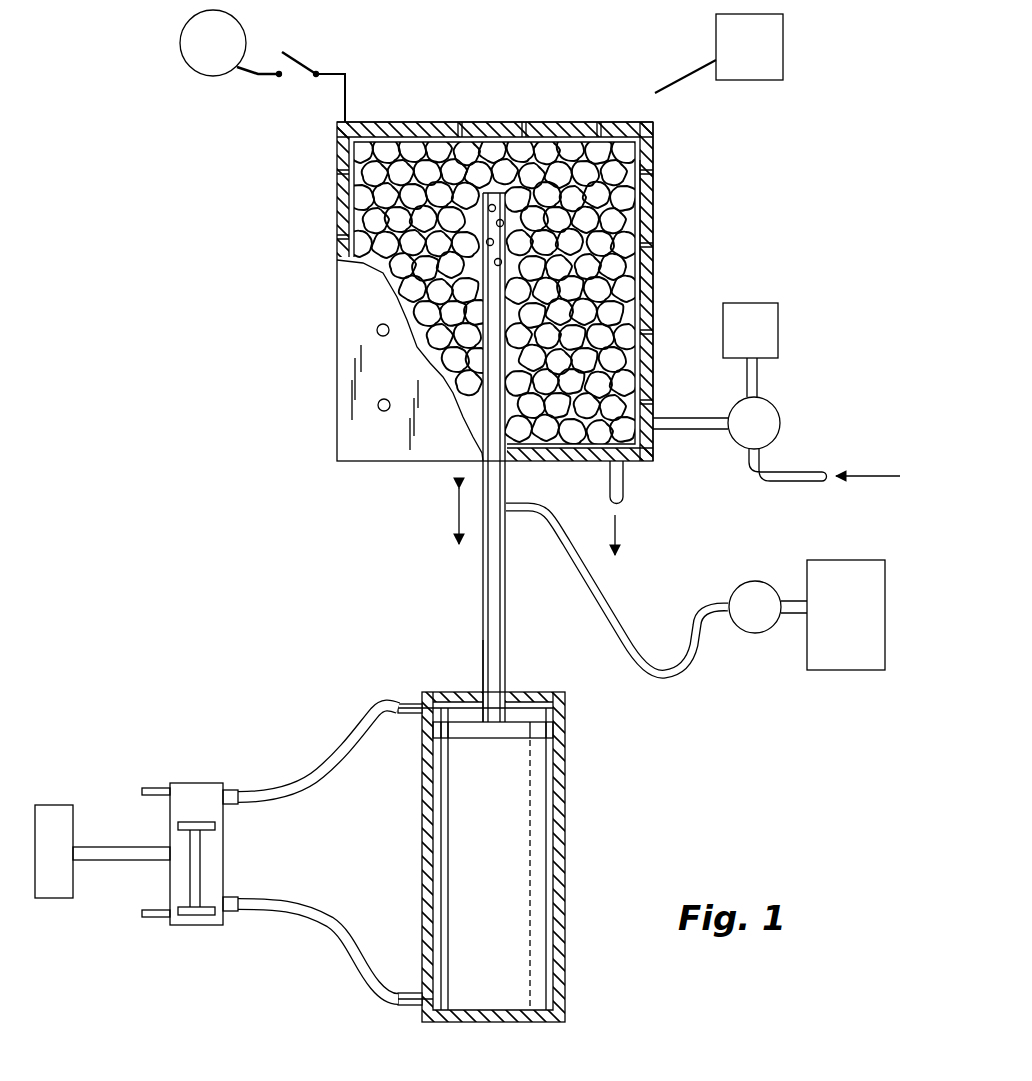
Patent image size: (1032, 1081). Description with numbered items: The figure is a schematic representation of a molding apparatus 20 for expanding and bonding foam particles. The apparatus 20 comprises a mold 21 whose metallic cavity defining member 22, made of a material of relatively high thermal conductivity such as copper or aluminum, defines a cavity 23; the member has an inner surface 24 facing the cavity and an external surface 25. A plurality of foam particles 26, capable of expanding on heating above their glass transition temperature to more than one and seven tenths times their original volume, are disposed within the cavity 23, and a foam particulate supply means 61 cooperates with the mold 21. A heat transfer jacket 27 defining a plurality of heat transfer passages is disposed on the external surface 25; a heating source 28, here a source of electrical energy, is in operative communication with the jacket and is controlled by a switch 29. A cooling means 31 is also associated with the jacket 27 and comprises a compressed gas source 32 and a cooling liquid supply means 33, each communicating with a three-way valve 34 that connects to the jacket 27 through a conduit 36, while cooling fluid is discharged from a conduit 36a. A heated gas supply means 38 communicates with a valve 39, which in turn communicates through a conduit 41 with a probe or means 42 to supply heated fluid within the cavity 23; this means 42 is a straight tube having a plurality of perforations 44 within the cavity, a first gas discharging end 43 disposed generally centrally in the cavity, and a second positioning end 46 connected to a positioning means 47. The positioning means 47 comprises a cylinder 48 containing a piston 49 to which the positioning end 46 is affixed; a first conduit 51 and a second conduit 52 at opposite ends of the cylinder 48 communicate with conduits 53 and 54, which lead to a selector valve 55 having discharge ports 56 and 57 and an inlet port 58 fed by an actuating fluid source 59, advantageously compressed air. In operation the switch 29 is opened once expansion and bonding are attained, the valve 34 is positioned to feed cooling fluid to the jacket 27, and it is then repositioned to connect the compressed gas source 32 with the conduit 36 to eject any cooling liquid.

The molding apparatus 20 is at (272, 520).
The mold 21 is at (487, 97).
The cavity defining member 22 is at (348, 205).
The cavity 23 is at (640, 150).
The inner surface 24 is at (368, 175).
The external surface 25 is at (337, 225).
The foam particles 26 is at (650, 270).
The heat transfer jacket 27 is at (650, 195).
The heating source 28 is at (192, 42).
The switch 29 is at (300, 62).
The cooling means 31 is at (798, 365).
The compressed gas source 32 is at (760, 312).
The cooling liquid supply means 33 is at (805, 478).
The 3-way valve 34 is at (776, 425).
The conduit 36 is at (700, 422).
The conduit 36a is at (622, 490).
The heated gas supply means 38 is at (860, 655).
The valve 39 is at (742, 585).
The conduit 41 is at (680, 668).
The means to supply heated fluid 42 is at (490, 577).
The gas discharging end 43 is at (490, 192).
The perforations 44 is at (512, 210).
The positioning end 46 is at (490, 683).
The positioning means 47 is at (290, 765).
The cylinder 48 is at (565, 820).
The piston 49 is at (470, 730).
The first conduit 51 is at (410, 714).
The second conduit 52 is at (408, 1008).
The conduit 53 is at (312, 790).
The conduit 54 is at (333, 930).
The selector valve 55 is at (205, 790).
The discharge port 56 is at (155, 788).
The discharge port 57 is at (145, 912).
The inlet port 58 is at (133, 850).
The actuating fluid source 59 is at (50, 880).
The foam particulate supply means 61 is at (772, 42).